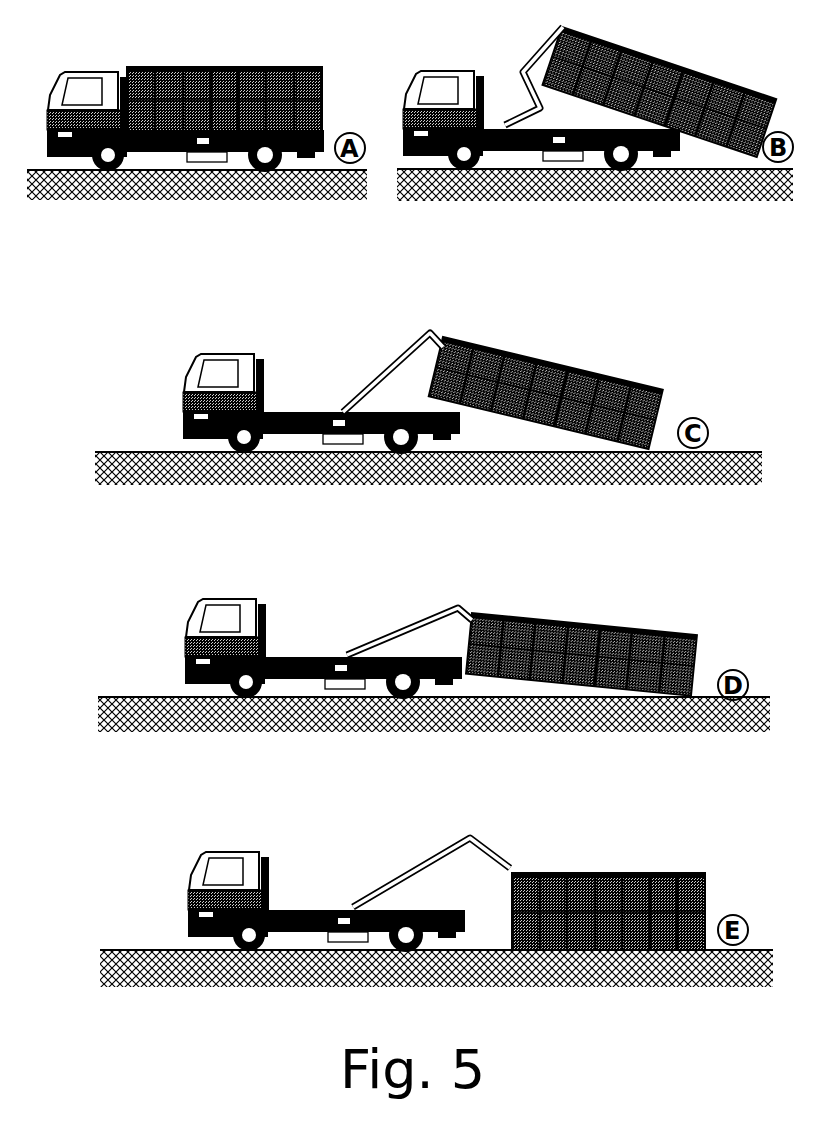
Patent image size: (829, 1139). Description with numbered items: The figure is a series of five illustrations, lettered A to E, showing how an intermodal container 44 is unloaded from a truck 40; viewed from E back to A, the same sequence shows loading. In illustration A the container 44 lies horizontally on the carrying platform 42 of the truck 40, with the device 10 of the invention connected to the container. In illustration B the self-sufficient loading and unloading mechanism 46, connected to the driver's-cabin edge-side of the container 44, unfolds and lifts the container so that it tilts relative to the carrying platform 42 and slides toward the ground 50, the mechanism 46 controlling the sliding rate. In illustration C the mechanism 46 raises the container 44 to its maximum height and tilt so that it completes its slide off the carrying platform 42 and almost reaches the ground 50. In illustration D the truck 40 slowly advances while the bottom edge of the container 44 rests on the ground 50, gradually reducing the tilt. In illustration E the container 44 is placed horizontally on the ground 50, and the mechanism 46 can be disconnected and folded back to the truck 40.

The device 10 is at (265, 491).
The truck 40 is at (70, 72).
The carrying platform 42 is at (548, 142).
The intermodal container 44 is at (218, 75).
The self-sufficient loading and unloading mechanism 46 is at (537, 55).
The ground 50 is at (745, 180).